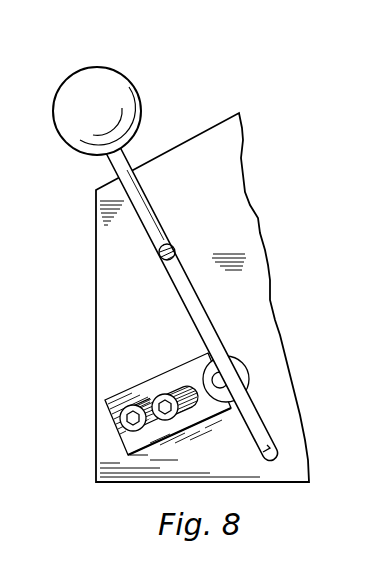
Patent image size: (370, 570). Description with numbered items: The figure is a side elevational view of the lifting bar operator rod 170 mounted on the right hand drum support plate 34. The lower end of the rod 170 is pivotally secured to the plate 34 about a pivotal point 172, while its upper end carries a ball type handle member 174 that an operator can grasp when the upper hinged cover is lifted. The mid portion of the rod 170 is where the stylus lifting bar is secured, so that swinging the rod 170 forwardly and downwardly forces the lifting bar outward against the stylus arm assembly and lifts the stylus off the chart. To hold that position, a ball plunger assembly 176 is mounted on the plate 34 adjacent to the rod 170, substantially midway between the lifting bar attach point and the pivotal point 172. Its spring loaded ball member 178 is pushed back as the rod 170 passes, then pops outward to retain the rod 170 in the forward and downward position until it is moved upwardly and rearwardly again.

The right hand drum support plate 34 is at (96, 332).
The lifting bar operator rod 170 is at (155, 197).
The pivotal point 172 is at (276, 440).
The ball type handle member 174 is at (98, 68).
The ball plunger assembly 176 is at (212, 400).
The spring loaded ball member 178 is at (216, 374).